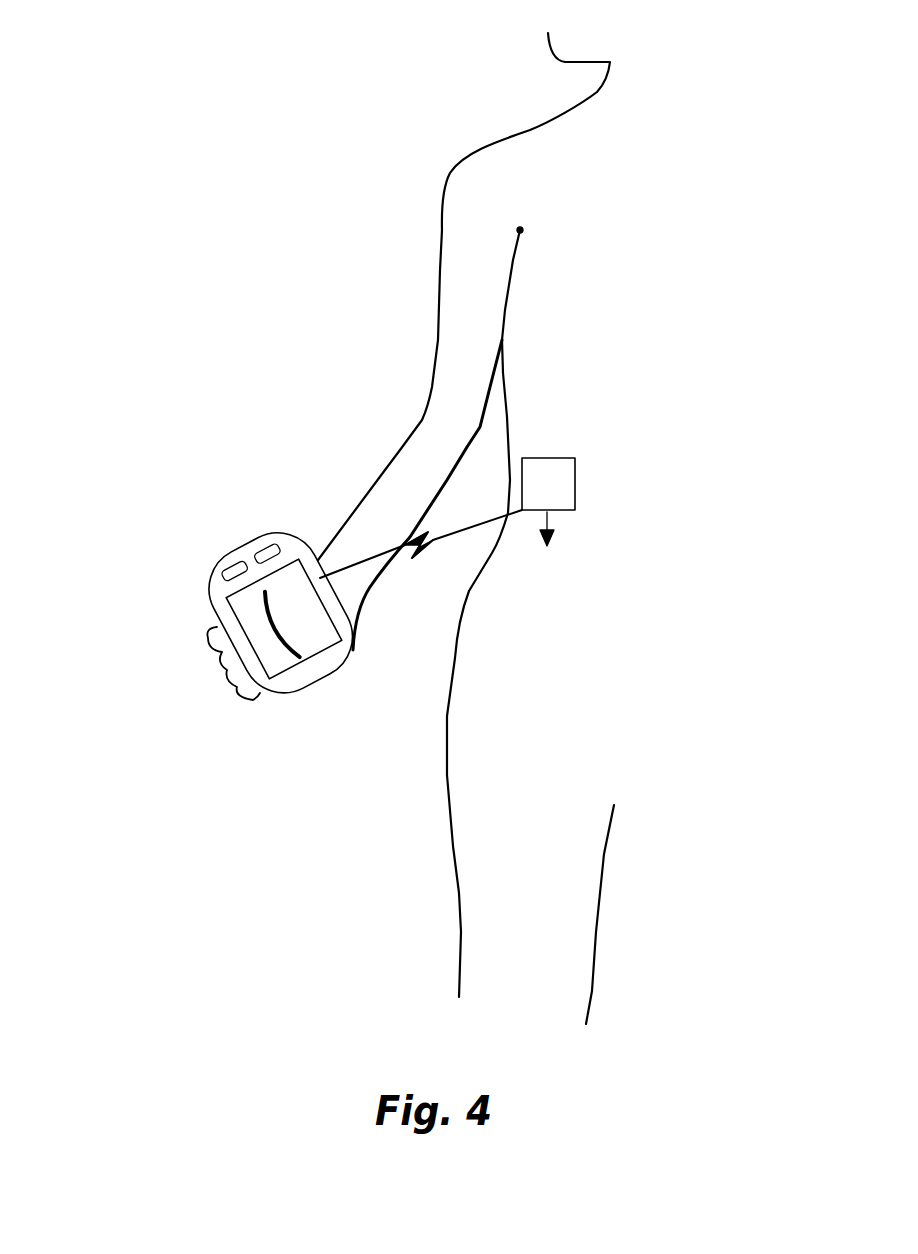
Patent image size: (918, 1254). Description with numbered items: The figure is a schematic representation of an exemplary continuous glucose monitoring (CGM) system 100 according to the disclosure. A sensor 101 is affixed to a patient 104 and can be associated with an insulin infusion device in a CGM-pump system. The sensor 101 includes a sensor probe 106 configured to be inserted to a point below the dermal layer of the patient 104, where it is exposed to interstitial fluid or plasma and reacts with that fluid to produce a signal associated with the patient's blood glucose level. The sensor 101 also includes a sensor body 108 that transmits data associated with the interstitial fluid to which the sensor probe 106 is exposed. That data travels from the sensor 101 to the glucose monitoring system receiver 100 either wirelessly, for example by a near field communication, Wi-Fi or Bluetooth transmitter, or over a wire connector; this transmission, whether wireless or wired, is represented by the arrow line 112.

The CGM system 100 is at (203, 599).
The sensor 101 is at (605, 424).
The patient 104 is at (460, 124).
The sensor probe 106 is at (547, 542).
The sensor body 108 is at (575, 495).
The arrow line 112 is at (382, 553).